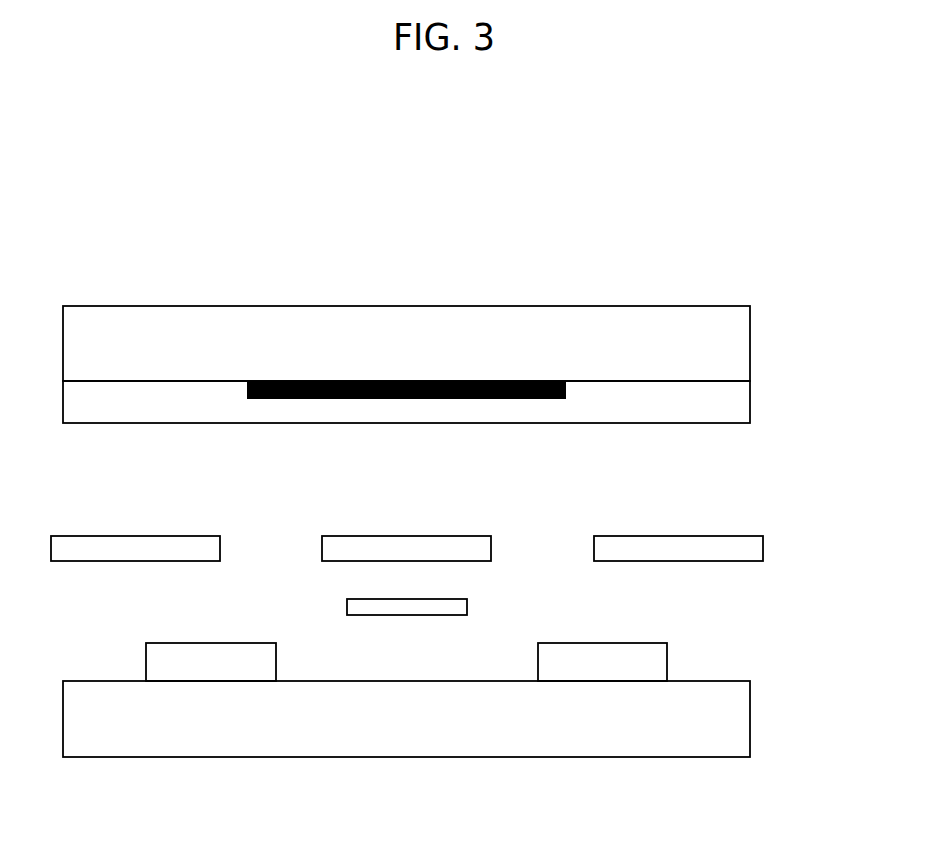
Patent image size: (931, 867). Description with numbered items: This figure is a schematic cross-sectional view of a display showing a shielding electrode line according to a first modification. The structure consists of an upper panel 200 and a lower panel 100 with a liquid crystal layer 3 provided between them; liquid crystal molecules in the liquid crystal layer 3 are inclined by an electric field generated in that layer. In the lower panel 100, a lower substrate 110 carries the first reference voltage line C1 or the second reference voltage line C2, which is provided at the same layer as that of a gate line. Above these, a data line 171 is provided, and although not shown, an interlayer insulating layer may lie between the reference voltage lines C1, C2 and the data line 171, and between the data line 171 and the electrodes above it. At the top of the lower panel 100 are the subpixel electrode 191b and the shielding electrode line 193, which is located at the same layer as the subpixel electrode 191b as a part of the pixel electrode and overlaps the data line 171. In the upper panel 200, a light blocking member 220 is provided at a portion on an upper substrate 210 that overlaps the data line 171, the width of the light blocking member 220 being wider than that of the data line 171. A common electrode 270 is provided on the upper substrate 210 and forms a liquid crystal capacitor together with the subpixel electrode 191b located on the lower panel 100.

The upper panel 200 is at (446, 335).
The upper substrate 210 is at (360, 332).
The light blocking member 220 is at (511, 380).
The common electrode 270 is at (668, 393).
The liquid crystal layer 3 is at (781, 430).
The lower panel 100 is at (440, 657).
The subpixel electrode 191b is at (171, 543).
The shielding electrode line 193 is at (465, 543).
The data line 171 is at (444, 608).
The lower substrate 110 is at (327, 735).
The first reference voltage line C1 is at (187, 670).
The second reference voltage line C2 is at (617, 670).